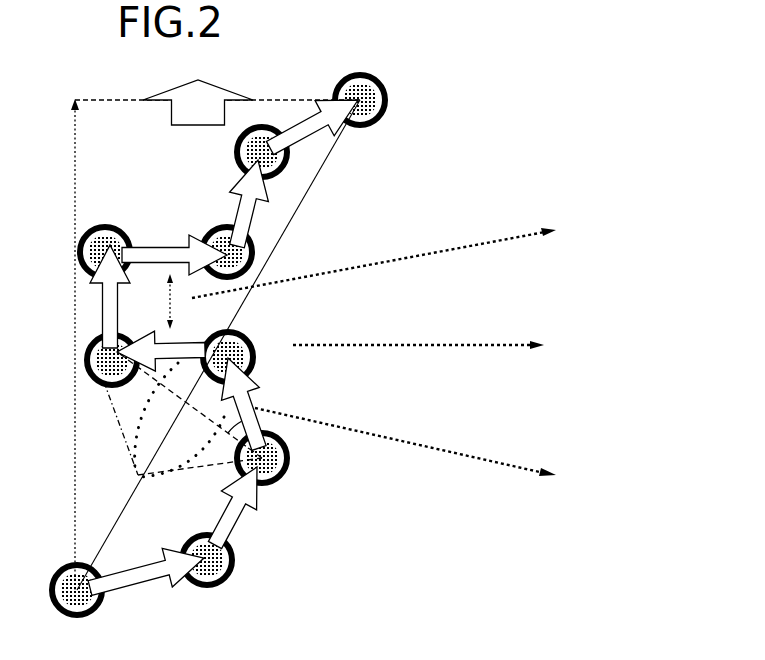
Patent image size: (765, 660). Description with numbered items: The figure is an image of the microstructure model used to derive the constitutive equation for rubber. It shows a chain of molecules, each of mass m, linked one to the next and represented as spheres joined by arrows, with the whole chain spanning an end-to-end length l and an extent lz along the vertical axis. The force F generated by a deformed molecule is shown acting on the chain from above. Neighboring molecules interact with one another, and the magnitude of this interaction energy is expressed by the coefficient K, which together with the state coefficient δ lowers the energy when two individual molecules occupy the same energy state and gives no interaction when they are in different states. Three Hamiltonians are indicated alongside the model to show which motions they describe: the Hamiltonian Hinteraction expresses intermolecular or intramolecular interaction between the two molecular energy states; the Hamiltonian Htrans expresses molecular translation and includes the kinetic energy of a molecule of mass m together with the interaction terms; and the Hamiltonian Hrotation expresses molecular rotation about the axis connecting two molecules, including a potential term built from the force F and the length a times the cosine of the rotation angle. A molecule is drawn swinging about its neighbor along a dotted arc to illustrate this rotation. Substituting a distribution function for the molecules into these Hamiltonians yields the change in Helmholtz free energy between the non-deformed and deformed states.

The force generated by a deformed molecule F is at (198, 88).
The chain extent along z direction lz is at (100, 123).
The end-to-end chain length l is at (354, 170).
The coefficient expressing the magnitude of interaction energy K is at (160, 301).
The molecular mass m is at (239, 351).
The bond vector / acceleration a is at (255, 404).
The Hamiltonian expressing intermolecular or intramolecular interaction Hinteraction is at (438, 252).
The Hamiltonian expressing molecular translation Htrans is at (466, 346).
The Hamiltonian expressing molecular rotation Hrotation is at (458, 454).